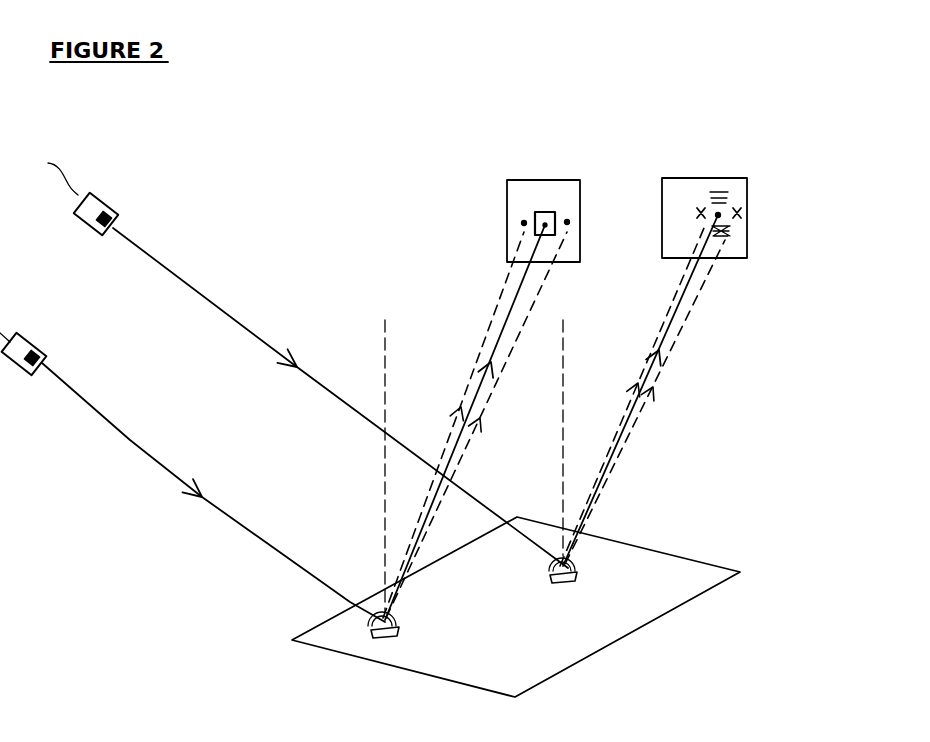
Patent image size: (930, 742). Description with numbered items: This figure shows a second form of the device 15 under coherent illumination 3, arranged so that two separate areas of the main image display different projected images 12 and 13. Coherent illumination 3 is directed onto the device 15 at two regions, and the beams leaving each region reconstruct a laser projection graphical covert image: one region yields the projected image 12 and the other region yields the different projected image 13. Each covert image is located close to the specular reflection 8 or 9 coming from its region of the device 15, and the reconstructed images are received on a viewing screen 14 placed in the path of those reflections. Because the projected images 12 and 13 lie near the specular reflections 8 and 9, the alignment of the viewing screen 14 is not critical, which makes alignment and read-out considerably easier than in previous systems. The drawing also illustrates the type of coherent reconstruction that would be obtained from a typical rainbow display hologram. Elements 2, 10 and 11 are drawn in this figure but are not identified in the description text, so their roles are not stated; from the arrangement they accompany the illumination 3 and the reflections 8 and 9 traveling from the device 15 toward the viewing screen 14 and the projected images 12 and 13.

The laser 2 is at (70, 269).
The coherent illumination 3 is at (305, 425).
The specular reflection 8 is at (516, 295).
The specular reflection 9 is at (675, 326).
The scattered beam 10 is at (708, 276).
The scattered beam 11 is at (541, 283).
The projected image 12 is at (553, 208).
The projected image 13 is at (740, 200).
The viewing screen 14 is at (528, 178).
The device 15 is at (516, 607).